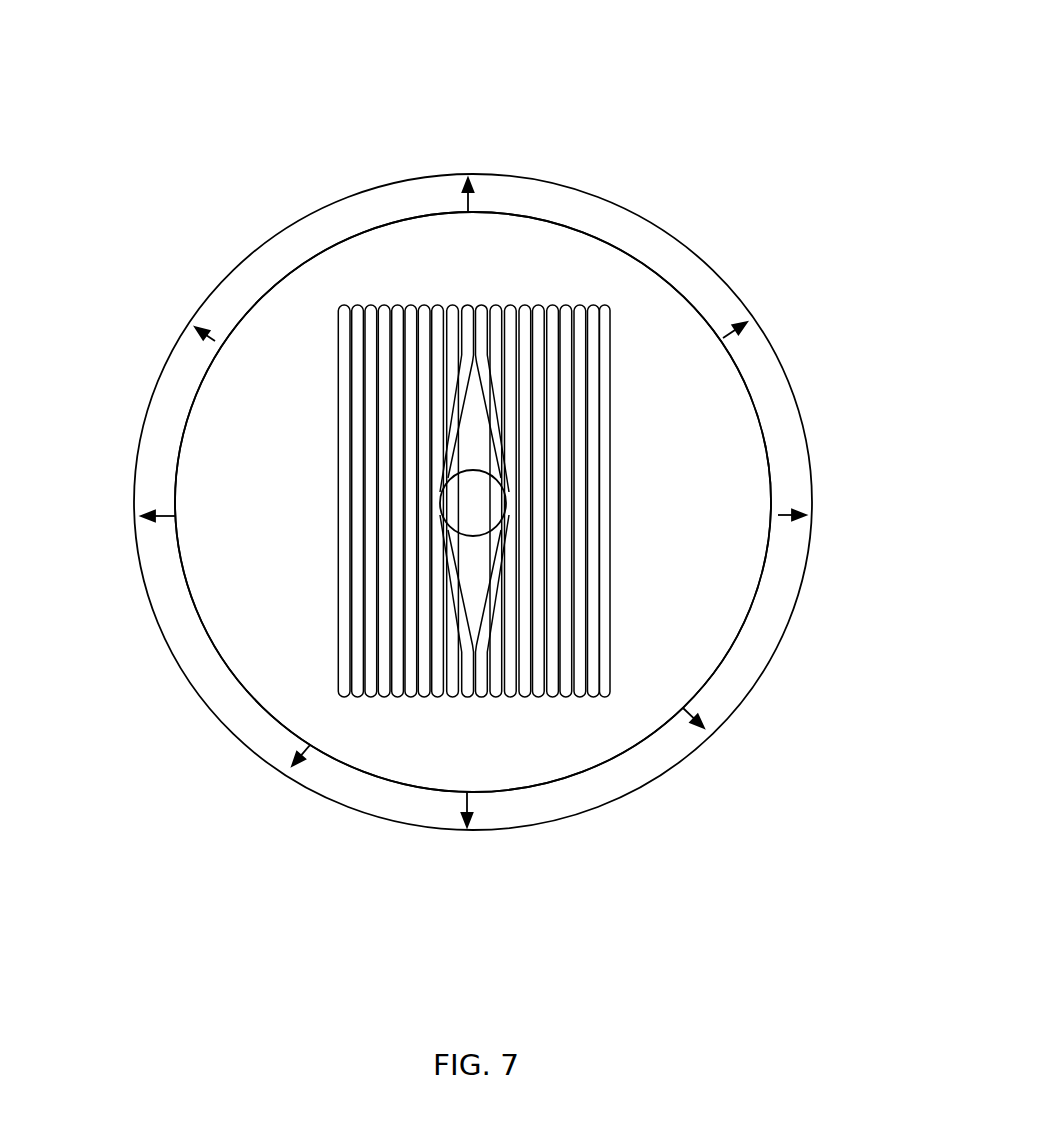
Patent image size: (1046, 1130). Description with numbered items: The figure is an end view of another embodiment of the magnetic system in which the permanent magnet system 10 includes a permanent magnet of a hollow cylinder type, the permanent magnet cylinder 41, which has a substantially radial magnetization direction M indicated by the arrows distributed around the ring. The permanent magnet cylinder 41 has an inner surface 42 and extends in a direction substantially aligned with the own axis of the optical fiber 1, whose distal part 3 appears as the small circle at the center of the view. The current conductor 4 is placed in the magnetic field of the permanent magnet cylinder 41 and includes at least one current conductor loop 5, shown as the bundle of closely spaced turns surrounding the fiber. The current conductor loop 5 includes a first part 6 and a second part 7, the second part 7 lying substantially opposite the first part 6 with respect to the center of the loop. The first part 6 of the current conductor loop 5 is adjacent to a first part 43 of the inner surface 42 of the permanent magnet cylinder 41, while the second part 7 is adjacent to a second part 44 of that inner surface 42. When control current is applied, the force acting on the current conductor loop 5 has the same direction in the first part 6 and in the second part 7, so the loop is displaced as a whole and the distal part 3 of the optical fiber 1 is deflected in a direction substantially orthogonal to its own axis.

The optical fiber 1 is at (660, 415).
The distal part of the optical fiber 3 is at (487, 493).
The current conductor 4 is at (331, 466).
The current conductor loop 5 is at (331, 352).
The first part of the current conductor loop 6 is at (426, 306).
The second part of the current conductor loop 7 is at (407, 697).
The permanent magnet system 10 is at (472, 476).
The permanent magnet cylinder 41 is at (274, 252).
The inner surface 42 is at (473, 465).
The first part of the inner surface 43 is at (375, 229).
The second part of the inner surface 44 is at (526, 786).
The magnetization direction M is at (473, 444).